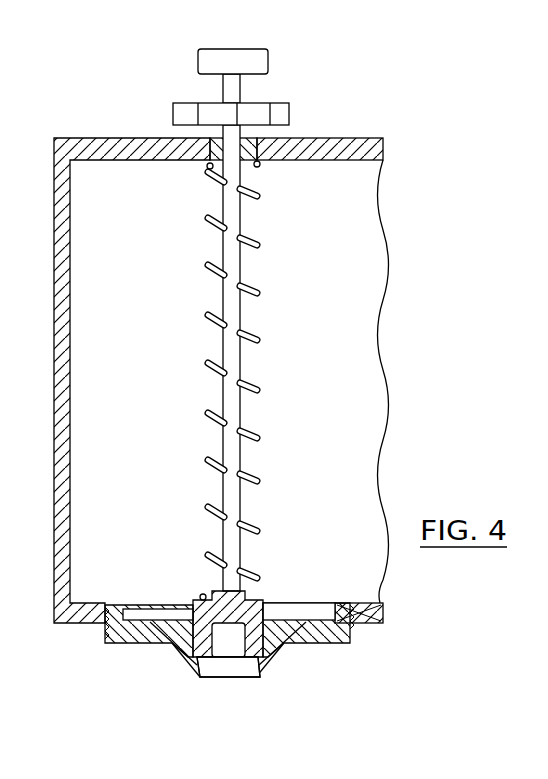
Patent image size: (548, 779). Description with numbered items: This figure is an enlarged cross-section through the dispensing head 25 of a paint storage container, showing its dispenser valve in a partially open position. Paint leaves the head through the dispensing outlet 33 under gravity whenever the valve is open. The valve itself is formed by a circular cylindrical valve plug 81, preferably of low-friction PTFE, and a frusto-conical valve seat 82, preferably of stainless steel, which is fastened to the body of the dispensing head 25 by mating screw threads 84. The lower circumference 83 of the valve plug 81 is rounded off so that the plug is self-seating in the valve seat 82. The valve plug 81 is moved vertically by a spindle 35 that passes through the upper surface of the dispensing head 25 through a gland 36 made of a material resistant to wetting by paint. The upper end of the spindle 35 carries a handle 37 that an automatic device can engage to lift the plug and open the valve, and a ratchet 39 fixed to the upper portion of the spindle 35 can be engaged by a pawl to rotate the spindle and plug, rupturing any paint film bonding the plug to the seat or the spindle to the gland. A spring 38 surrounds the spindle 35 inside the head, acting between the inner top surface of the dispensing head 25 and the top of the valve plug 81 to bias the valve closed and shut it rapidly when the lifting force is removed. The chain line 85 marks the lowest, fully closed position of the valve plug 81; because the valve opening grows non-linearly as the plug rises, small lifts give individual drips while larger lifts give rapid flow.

The dispensing head 25 is at (384, 150).
The dispensing outlet 33 is at (201, 682).
The spindle 35 is at (238, 316).
The gland 36 is at (250, 140).
The handle 37 is at (265, 62).
The spring 38 is at (253, 240).
The ratchet 39 is at (173, 110).
The valve plug 81 is at (265, 601).
The valve seat 82 is at (270, 662).
The lower circumference 83 is at (197, 665).
The screw threads 84 is at (377, 630).
The chain line 85 is at (243, 678).